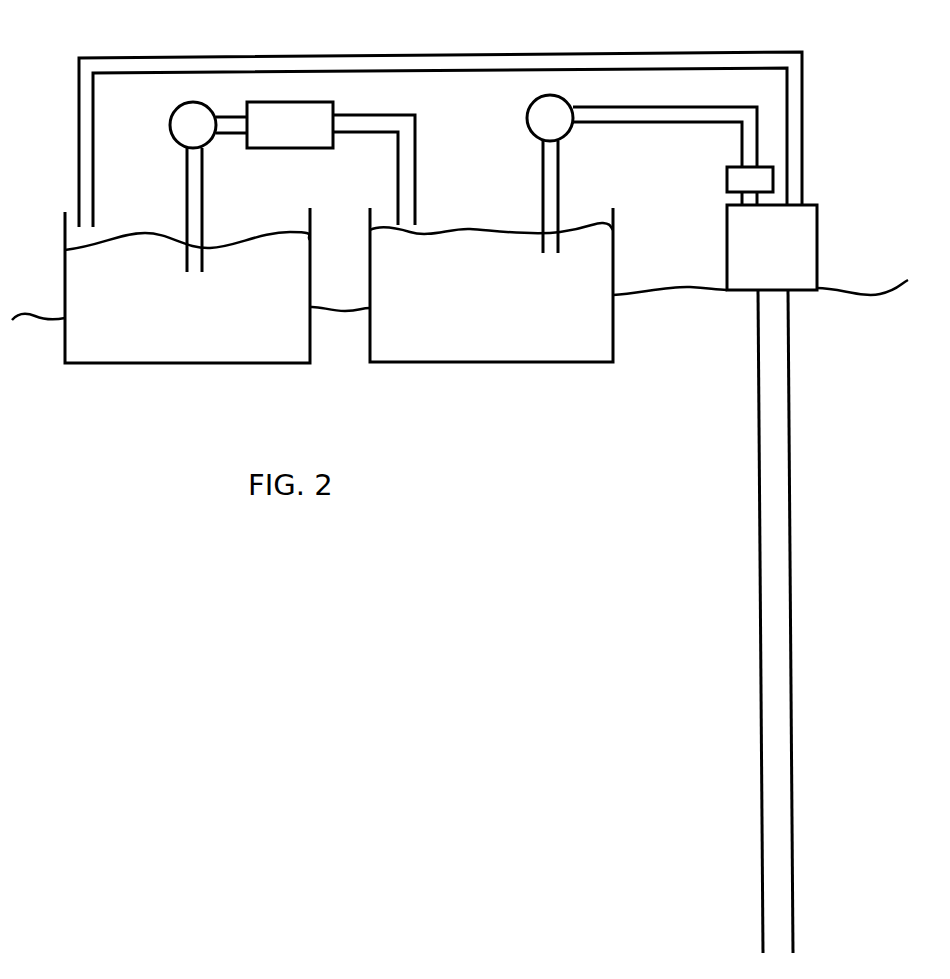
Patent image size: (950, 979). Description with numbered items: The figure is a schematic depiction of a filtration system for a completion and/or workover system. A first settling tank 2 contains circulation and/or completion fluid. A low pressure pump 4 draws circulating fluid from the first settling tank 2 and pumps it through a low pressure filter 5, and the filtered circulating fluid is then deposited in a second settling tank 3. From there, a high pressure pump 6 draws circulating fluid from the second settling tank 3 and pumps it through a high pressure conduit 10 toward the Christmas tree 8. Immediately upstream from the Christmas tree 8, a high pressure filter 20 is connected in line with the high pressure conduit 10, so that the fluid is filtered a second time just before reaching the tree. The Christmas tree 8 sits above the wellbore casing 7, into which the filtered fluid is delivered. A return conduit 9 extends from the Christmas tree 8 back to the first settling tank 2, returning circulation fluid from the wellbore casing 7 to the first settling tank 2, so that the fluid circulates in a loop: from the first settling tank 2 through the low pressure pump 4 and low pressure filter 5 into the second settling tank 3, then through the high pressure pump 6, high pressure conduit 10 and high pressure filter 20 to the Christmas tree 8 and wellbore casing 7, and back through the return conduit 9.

The first settling tank 2 is at (140, 358).
The second settling tank 3 is at (463, 362).
The low pressure pump 4 is at (192, 101).
The low pressure filter 5 is at (307, 101).
The high pressure pump 6 is at (527, 113).
The wellbore casing 7 is at (789, 477).
The Christmas tree 8 is at (817, 205).
The return conduit 9 is at (537, 53).
The high pressure conduit 10 is at (648, 105).
The high pressure filter 20 is at (773, 165).